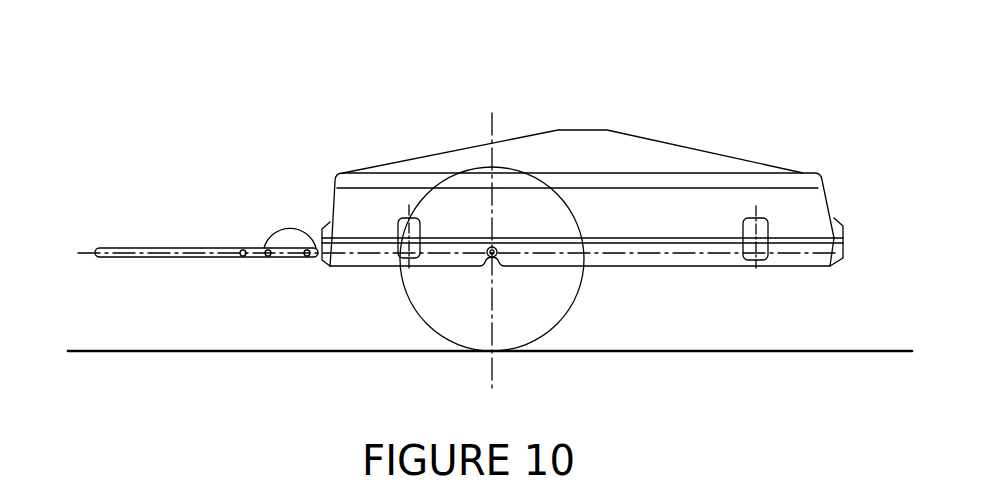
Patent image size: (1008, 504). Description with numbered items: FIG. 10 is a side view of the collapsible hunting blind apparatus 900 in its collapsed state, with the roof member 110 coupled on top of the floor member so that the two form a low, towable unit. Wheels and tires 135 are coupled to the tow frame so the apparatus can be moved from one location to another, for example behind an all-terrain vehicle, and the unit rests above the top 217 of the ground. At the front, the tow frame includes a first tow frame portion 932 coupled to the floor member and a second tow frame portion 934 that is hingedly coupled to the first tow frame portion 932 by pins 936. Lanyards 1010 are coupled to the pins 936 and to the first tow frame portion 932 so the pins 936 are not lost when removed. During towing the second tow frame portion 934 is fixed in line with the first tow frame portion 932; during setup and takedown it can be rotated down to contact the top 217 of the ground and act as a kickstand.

The collapsible hunting blind apparatus 900 is at (460, 207).
The roof member 110 is at (414, 137).
The wheels and tires 135 is at (422, 295).
The top of a ground 217 is at (167, 352).
The first tow frame portion 932 is at (318, 257).
The second tow frame portion 934 is at (132, 247).
The pins 936 is at (265, 258).
The lanyards 1010 is at (262, 245).